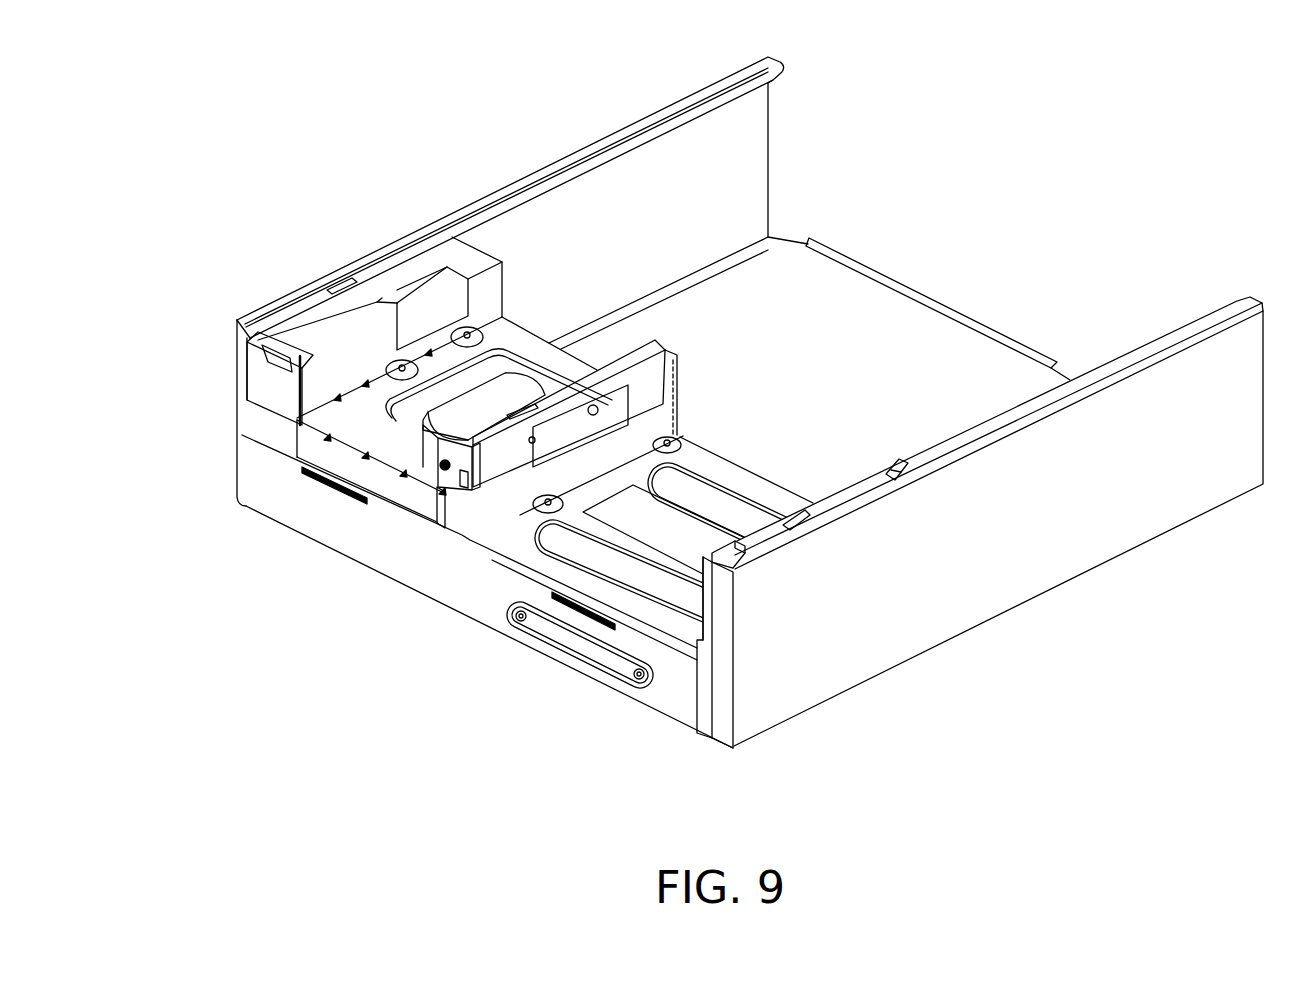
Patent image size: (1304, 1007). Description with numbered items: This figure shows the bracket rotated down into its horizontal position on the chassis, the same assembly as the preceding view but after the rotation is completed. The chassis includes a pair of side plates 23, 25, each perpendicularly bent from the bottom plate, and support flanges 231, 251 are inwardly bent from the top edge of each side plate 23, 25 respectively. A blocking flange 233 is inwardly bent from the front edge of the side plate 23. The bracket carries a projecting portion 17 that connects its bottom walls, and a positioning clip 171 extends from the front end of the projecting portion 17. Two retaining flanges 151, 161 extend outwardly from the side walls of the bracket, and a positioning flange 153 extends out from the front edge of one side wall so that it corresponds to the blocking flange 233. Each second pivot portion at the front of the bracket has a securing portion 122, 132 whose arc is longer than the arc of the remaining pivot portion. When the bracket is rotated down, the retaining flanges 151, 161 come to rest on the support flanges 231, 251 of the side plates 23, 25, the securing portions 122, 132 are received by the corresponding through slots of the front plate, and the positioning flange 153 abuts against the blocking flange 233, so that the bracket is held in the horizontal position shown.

The side plate 23 is at (980, 513).
The support flange 231 is at (1228, 309).
The blocking flange 233 is at (720, 709).
The side plate 25 is at (510, 275).
The support flange 251 is at (677, 118).
The retaining flange 161 is at (397, 270).
The projecting portion 17 is at (512, 495).
The positioning clip 171 is at (443, 530).
The securing portion 122 is at (582, 617).
The securing portion 132 is at (320, 482).
The retaining flange 151 is at (841, 492).
The positioning flange 153 is at (712, 598).